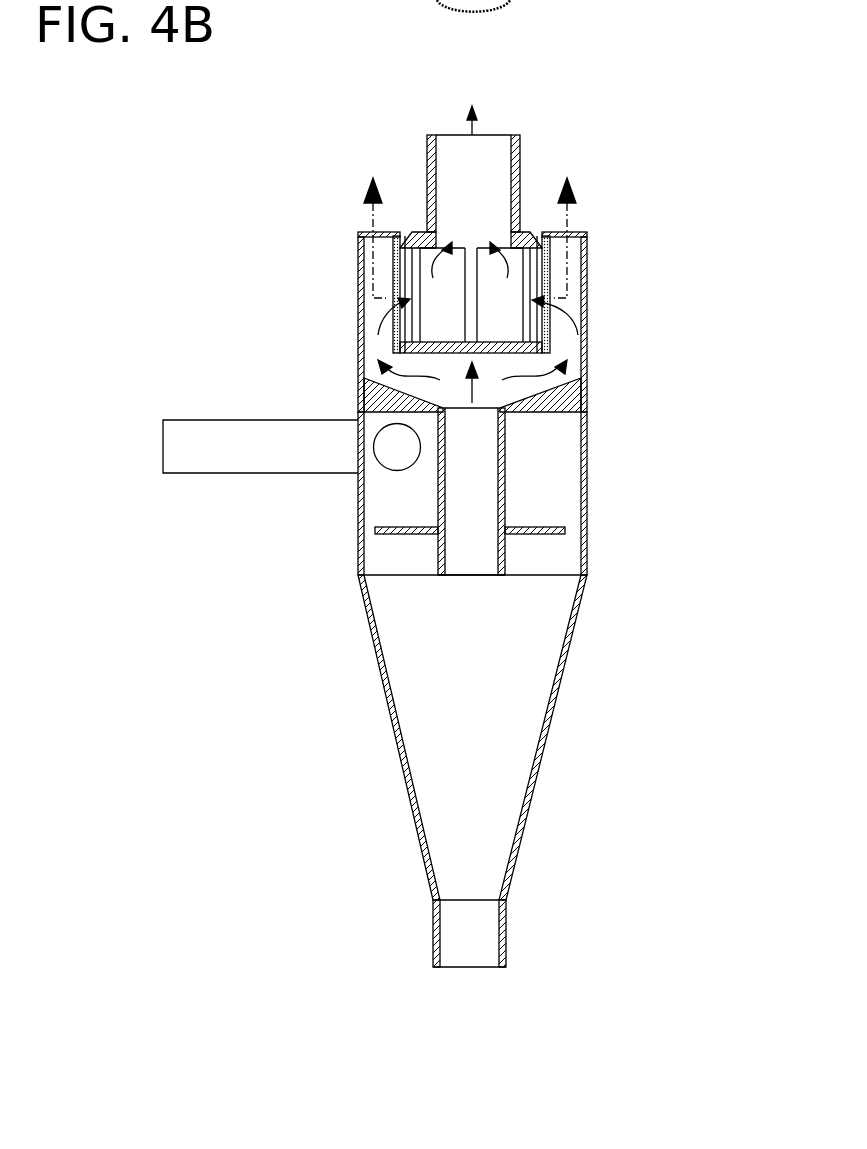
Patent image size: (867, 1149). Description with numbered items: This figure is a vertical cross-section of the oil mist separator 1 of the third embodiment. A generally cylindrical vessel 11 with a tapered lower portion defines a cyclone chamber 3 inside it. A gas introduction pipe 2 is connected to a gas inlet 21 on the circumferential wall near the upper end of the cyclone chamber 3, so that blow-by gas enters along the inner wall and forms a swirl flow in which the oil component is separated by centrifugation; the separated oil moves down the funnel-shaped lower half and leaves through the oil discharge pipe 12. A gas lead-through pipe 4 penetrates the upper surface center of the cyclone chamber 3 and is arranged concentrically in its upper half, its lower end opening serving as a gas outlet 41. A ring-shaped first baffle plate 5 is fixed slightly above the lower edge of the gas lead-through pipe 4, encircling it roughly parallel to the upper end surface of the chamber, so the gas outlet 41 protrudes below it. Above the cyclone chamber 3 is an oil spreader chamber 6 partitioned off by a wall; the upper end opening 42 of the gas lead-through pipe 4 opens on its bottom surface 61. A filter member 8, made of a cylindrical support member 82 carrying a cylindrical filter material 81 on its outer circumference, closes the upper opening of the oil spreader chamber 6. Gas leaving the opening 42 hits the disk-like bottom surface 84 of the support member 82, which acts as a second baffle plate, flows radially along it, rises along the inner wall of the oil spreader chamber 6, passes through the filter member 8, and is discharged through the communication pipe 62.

The oil mist separator 1 is at (342, 137).
The gas introduction pipe 2 is at (285, 473).
The gas inlet 21 is at (393, 448).
The cyclone chamber 3 is at (587, 468).
The gas lead-through pipe 4 is at (505, 492).
The gas outlet 41 is at (458, 573).
The upper end opening 42 is at (482, 410).
The first baffle plate 5 is at (532, 537).
The oil spreader chamber 6 is at (358, 232).
The bottom surface 61 is at (387, 390).
The communication pipe 62 is at (519, 152).
The filter member 8 is at (553, 335).
The cylindrical filter material 81 is at (393, 292).
The cylindrical support member 82 is at (540, 233).
The bottom surface 84 is at (545, 345).
The vessel 11 is at (357, 513).
The oil discharge pipe 12 is at (433, 937).